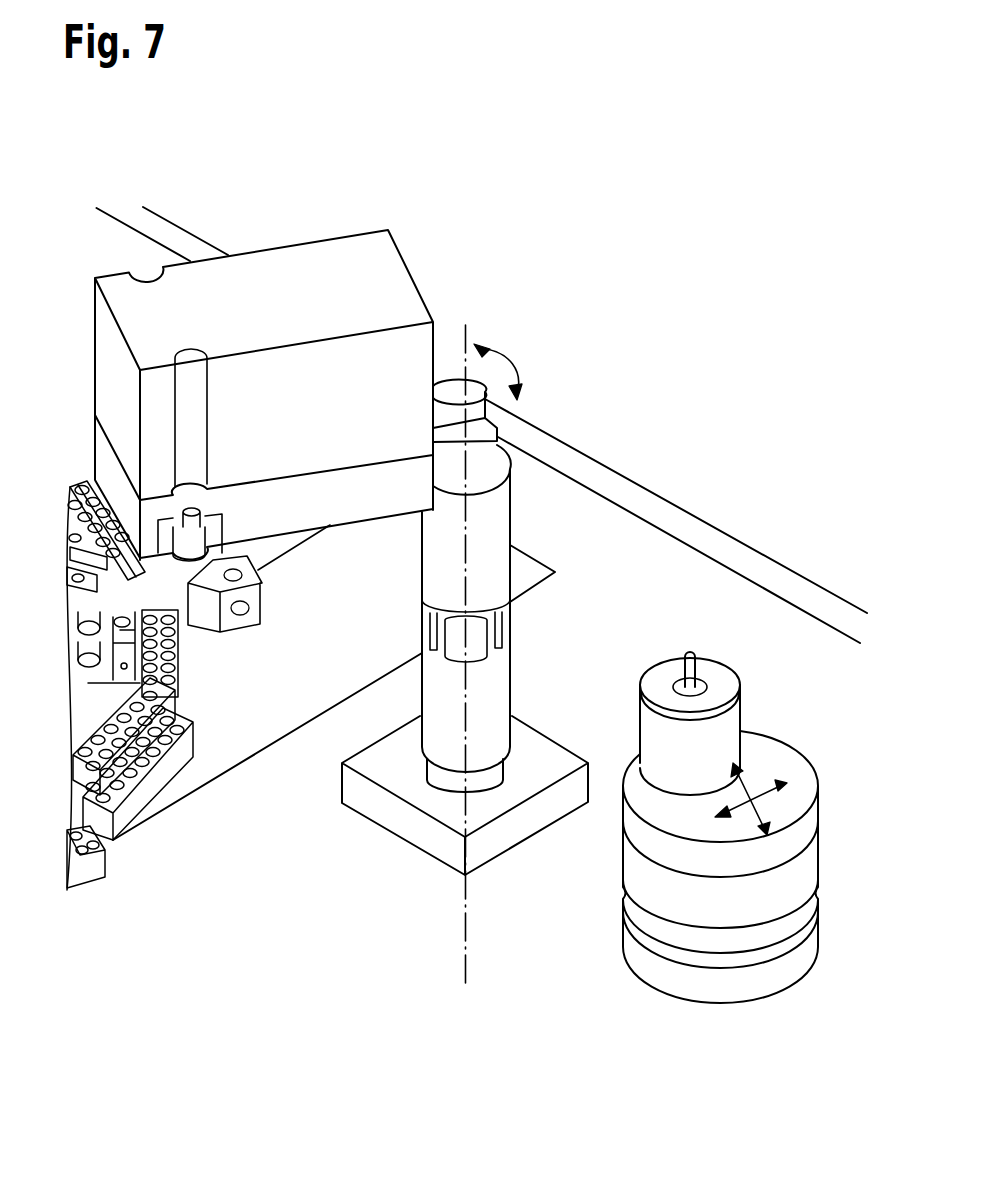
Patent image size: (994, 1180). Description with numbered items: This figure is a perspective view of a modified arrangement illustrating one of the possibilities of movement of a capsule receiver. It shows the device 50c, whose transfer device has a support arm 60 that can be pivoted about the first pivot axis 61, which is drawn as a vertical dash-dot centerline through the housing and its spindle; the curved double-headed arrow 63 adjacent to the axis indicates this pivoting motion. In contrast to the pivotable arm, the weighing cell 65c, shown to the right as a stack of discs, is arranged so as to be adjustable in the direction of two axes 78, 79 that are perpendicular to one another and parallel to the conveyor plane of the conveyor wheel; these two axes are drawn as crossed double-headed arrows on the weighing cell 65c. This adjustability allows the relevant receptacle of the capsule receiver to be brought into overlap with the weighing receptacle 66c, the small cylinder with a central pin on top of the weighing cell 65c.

The support arm 60 is at (345, 255).
The device 50c is at (522, 308).
The rotation direction 63 is at (512, 368).
The first pivot axis 61 is at (463, 952).
The weighing receptacle 66c is at (720, 687).
The weighing cell 65c is at (722, 757).
The axis 79 is at (762, 812).
The axis 78 is at (765, 840).